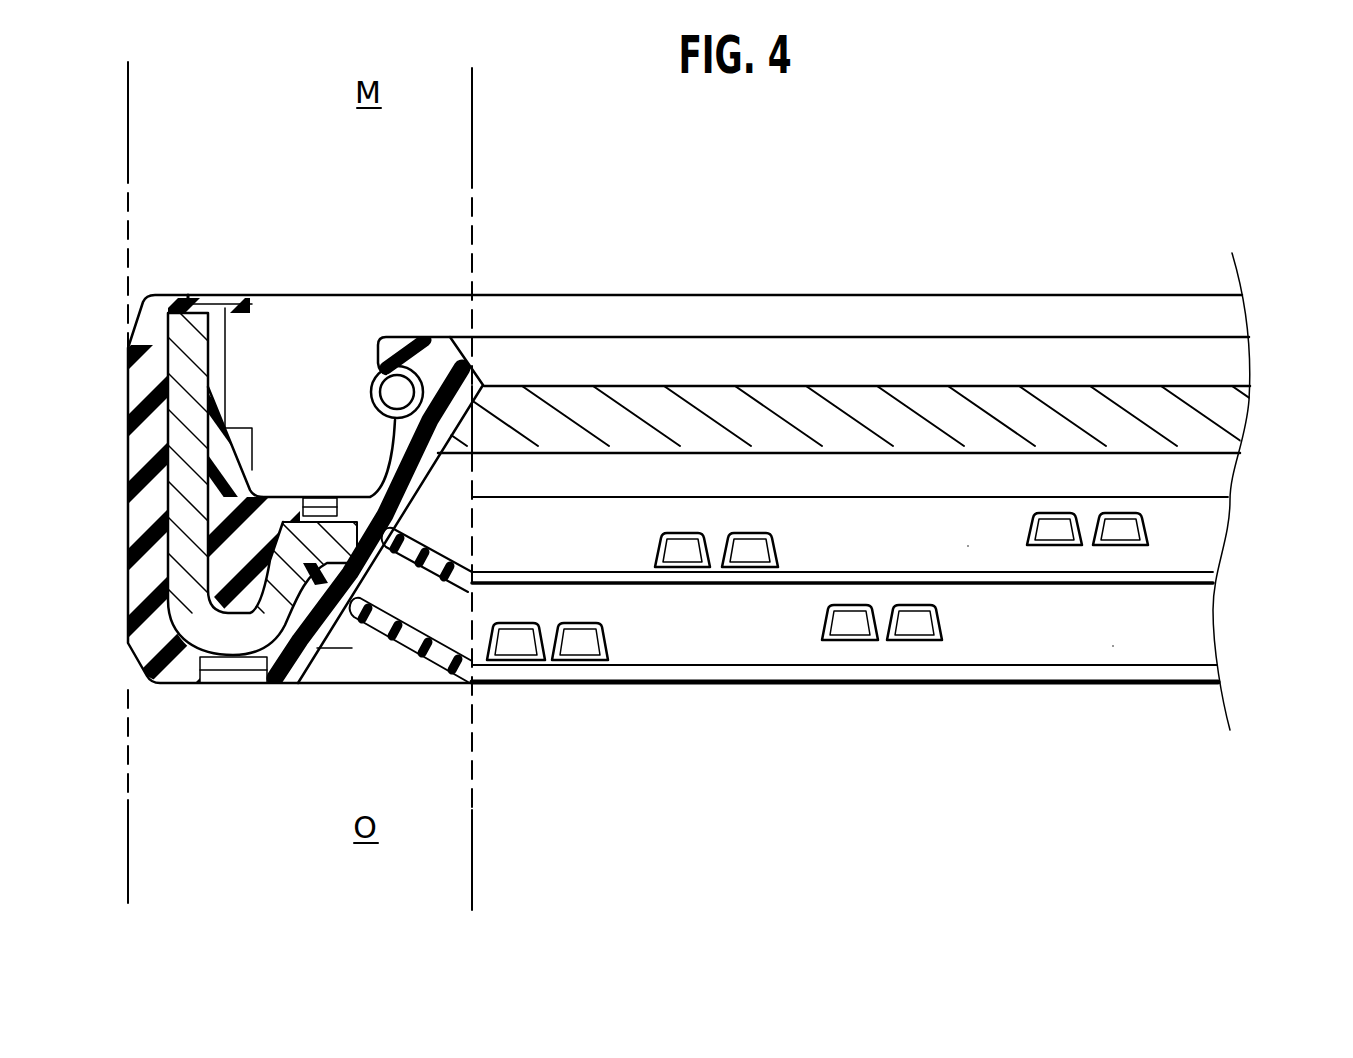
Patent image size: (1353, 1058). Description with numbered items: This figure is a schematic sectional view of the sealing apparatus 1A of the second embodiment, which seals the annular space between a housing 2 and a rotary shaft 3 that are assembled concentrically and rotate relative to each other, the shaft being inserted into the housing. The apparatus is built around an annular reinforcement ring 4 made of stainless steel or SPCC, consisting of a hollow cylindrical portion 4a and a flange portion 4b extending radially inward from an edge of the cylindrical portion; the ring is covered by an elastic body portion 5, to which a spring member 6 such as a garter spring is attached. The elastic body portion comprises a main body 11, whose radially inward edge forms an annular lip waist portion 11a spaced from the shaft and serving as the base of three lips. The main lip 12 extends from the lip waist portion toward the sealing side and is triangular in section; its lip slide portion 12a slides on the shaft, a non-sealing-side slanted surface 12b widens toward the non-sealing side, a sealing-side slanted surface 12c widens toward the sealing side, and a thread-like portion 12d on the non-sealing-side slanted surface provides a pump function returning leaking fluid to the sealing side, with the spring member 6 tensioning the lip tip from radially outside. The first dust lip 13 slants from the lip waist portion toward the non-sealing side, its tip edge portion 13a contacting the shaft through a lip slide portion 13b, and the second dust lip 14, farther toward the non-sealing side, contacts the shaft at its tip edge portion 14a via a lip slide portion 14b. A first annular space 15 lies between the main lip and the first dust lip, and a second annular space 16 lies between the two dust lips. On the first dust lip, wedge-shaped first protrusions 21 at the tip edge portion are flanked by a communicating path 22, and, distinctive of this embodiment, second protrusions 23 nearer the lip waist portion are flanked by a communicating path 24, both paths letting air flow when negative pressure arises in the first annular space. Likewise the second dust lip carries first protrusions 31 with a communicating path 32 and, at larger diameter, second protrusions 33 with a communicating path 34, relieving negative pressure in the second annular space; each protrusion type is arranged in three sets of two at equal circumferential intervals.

The sealing apparatus 1A is at (266, 140).
The housing 2 is at (128, 250).
The rotary shaft 3 is at (472, 158).
The reinforcement ring 4 is at (312, 392).
The cylindrical portion 4a is at (185, 358).
The flange portion 4b is at (326, 510).
The elastic body portion 5 is at (290, 650).
The spring member 6 is at (375, 375).
The main body 11 is at (650, 529).
The lip waist portion 11a is at (365, 510).
The main lip 12 is at (804, 448).
The lip slide portion 12a is at (1222, 382).
The non-sealing-side slanted surface 12b is at (1205, 410).
The sealing-side slanted surface 12c is at (1225, 358).
The thread-like portion 12d is at (1212, 453).
The first dust lip 13 is at (852, 658).
The tip edge portion 13a is at (1190, 560).
The lip slide portion 13b is at (1195, 585).
The second dust lip 14 is at (836, 708).
The tip edge portion 14a is at (1185, 650).
The lip slide portion 14b is at (1192, 678).
The first annular space 15 is at (972, 548).
The second annular space 16 is at (1114, 646).
The first protrusions 21 is at (682, 550).
The communicating path 22 is at (650, 557).
The second protrusions 23 is at (1052, 535).
The communicating path 24 is at (1015, 538).
The first protrusions 31 is at (518, 642).
The communicating path 32 is at (485, 650).
The second protrusions 33 is at (852, 623).
The communicating path 34 is at (818, 630).